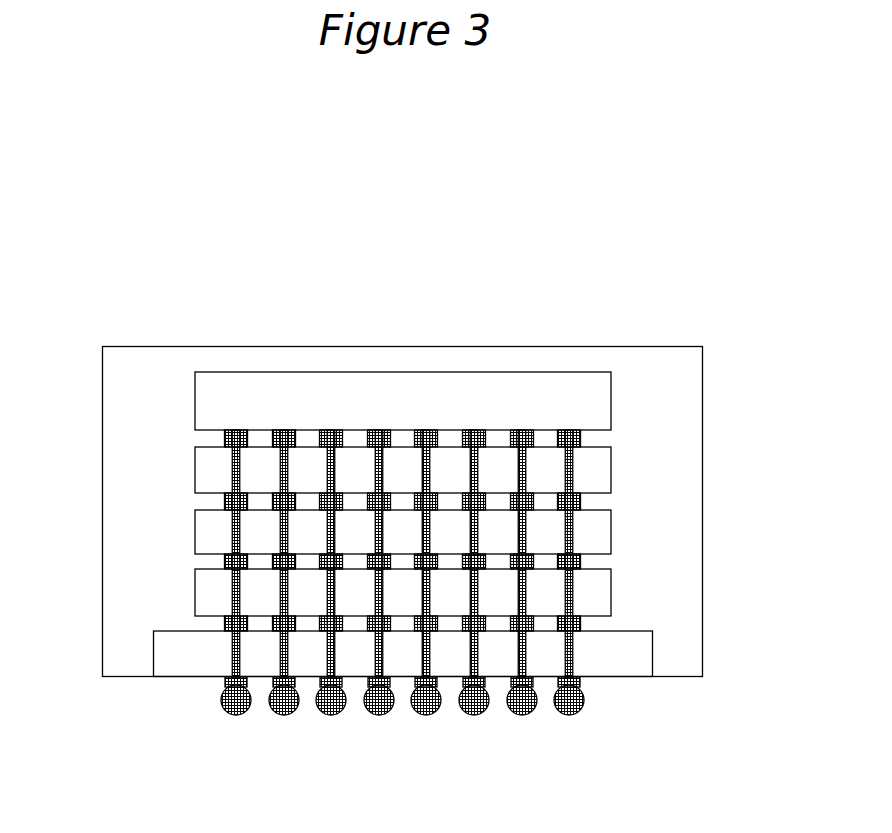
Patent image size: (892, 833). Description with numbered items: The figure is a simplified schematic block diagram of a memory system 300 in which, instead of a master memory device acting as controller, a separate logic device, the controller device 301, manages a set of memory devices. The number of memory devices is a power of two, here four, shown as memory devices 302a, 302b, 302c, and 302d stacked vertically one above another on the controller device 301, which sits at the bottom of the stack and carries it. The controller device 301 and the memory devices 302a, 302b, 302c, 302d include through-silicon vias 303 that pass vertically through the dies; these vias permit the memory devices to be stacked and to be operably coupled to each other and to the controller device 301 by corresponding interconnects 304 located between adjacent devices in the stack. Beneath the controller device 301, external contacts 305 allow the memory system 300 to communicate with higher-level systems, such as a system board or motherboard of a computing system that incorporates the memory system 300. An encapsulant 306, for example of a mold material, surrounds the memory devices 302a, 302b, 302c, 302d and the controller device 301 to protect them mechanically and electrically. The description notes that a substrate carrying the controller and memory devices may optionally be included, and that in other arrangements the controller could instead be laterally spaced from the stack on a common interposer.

The memory system 300 is at (113, 281).
The controller device 301 is at (652, 650).
The memory device 302a is at (611, 595).
The memory device 302b is at (611, 531).
The memory device 302c is at (611, 470).
The memory device 302d is at (611, 408).
The through-silicon vias 303 is at (232, 601).
The interconnects 304 is at (232, 498).
The external contacts 305 is at (222, 703).
The encapsulant 306 is at (152, 441).